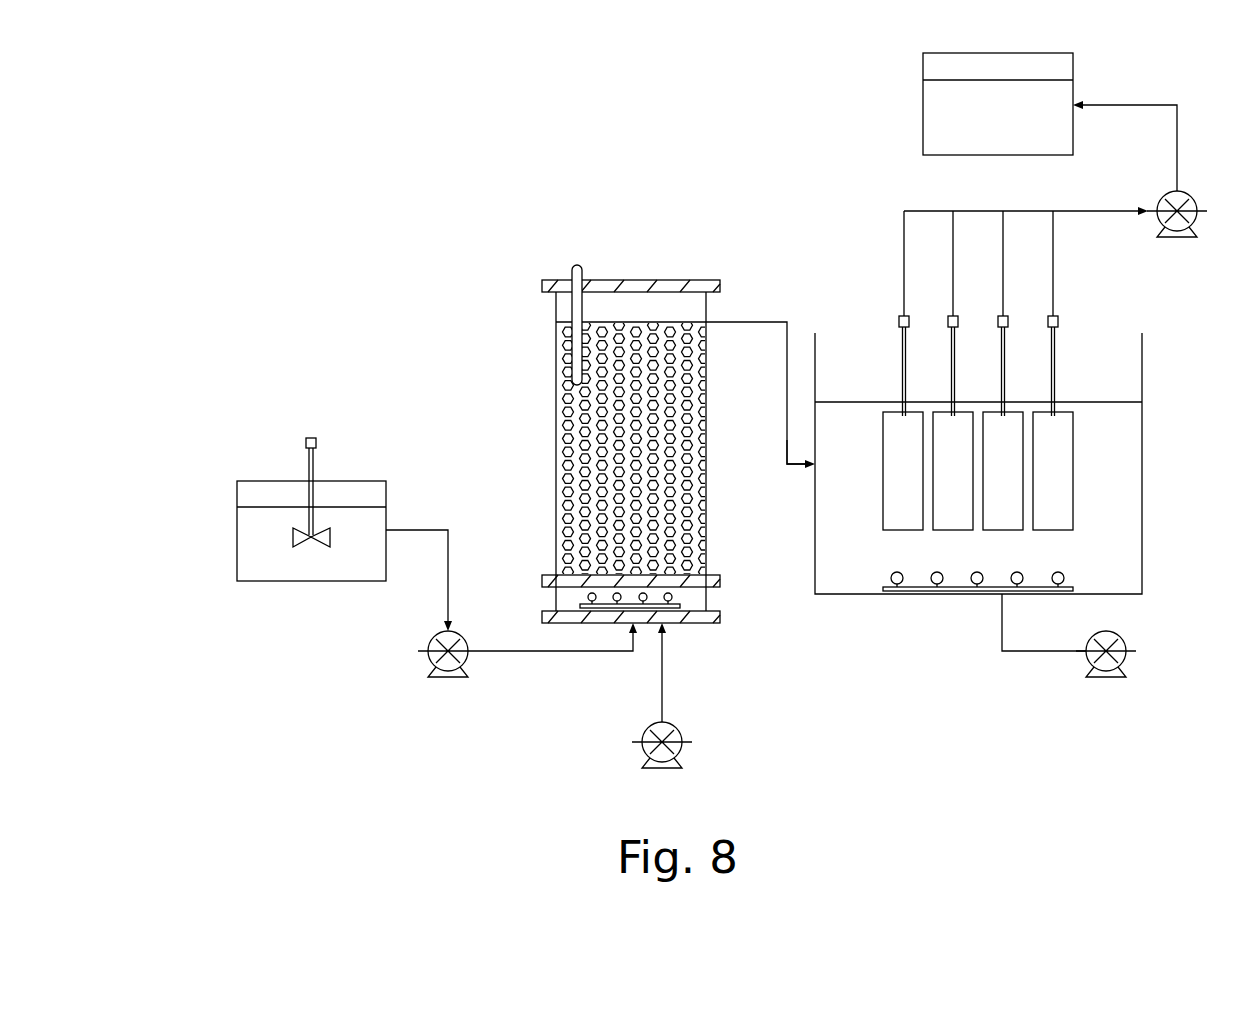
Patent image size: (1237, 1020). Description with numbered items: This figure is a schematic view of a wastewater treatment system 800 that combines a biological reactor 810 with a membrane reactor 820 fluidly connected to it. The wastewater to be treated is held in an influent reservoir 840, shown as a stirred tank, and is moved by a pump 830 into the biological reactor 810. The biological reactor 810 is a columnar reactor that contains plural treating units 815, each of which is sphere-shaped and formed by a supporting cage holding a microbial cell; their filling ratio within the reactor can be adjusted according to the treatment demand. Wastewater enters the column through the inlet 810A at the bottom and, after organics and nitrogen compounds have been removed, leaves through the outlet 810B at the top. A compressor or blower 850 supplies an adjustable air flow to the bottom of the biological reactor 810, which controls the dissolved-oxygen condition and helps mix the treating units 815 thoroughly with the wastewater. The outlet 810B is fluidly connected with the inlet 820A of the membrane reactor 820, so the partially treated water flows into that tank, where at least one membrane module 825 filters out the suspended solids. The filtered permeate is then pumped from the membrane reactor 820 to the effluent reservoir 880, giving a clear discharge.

The wastewater treatment system 800 is at (252, 205).
The biological reactor 810 is at (556, 432).
The inlet 810A is at (572, 671).
The outlet 810B is at (755, 377).
The treating units 815 is at (568, 503).
The membrane reactor 820 is at (1142, 508).
The inlet 820A is at (784, 473).
The membrane module 825 is at (1057, 478).
The pump 830 is at (432, 636).
The influent reservoir 840 is at (243, 503).
The compressor or blower 850 is at (652, 727).
The effluent reservoir 880 is at (1047, 57).